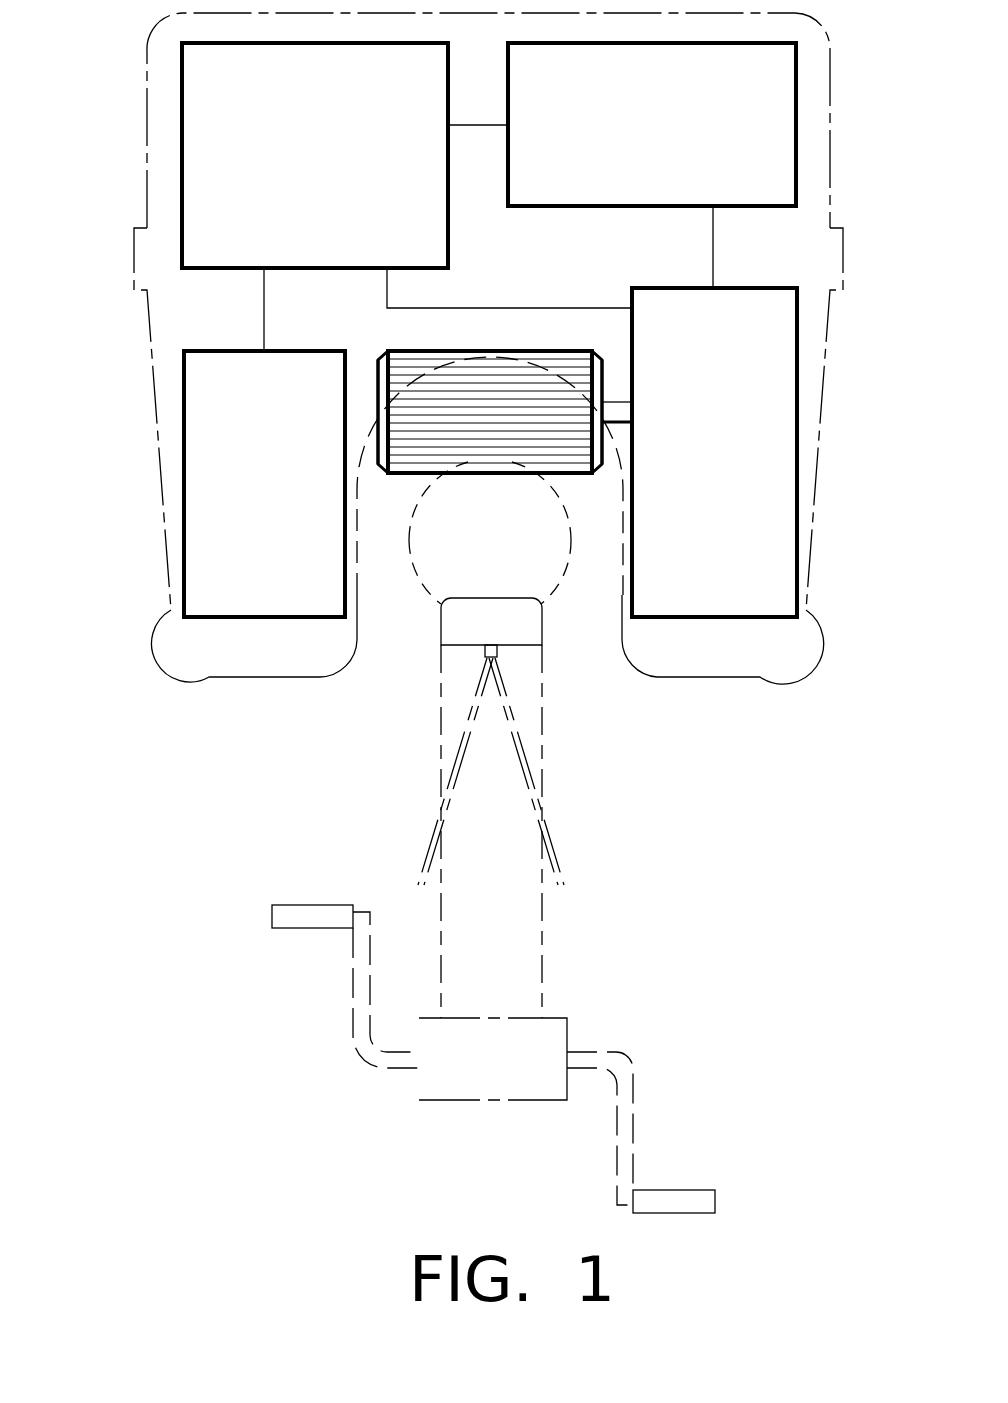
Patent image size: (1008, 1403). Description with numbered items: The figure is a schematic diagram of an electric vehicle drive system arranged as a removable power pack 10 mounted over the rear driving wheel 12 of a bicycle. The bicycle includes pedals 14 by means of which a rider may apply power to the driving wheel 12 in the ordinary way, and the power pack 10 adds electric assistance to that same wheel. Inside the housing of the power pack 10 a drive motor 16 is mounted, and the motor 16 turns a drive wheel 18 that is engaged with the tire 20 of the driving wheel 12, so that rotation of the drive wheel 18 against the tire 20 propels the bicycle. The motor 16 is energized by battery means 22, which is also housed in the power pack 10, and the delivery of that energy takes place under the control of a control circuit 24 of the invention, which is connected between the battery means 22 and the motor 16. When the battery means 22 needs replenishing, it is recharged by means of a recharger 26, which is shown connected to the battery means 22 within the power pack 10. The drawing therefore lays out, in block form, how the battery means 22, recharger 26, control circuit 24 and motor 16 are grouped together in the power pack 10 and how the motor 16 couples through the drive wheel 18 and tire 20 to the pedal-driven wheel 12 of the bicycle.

The power pack 10 is at (182, 681).
The rear driving wheel 12 is at (448, 617).
The pedals 14 is at (320, 928).
The drive motor 16 is at (772, 587).
The drive wheel 18 is at (575, 463).
The tire 20 is at (440, 558).
The battery means 22 is at (212, 109).
The control circuit 24 is at (778, 172).
The recharger 26 is at (194, 419).